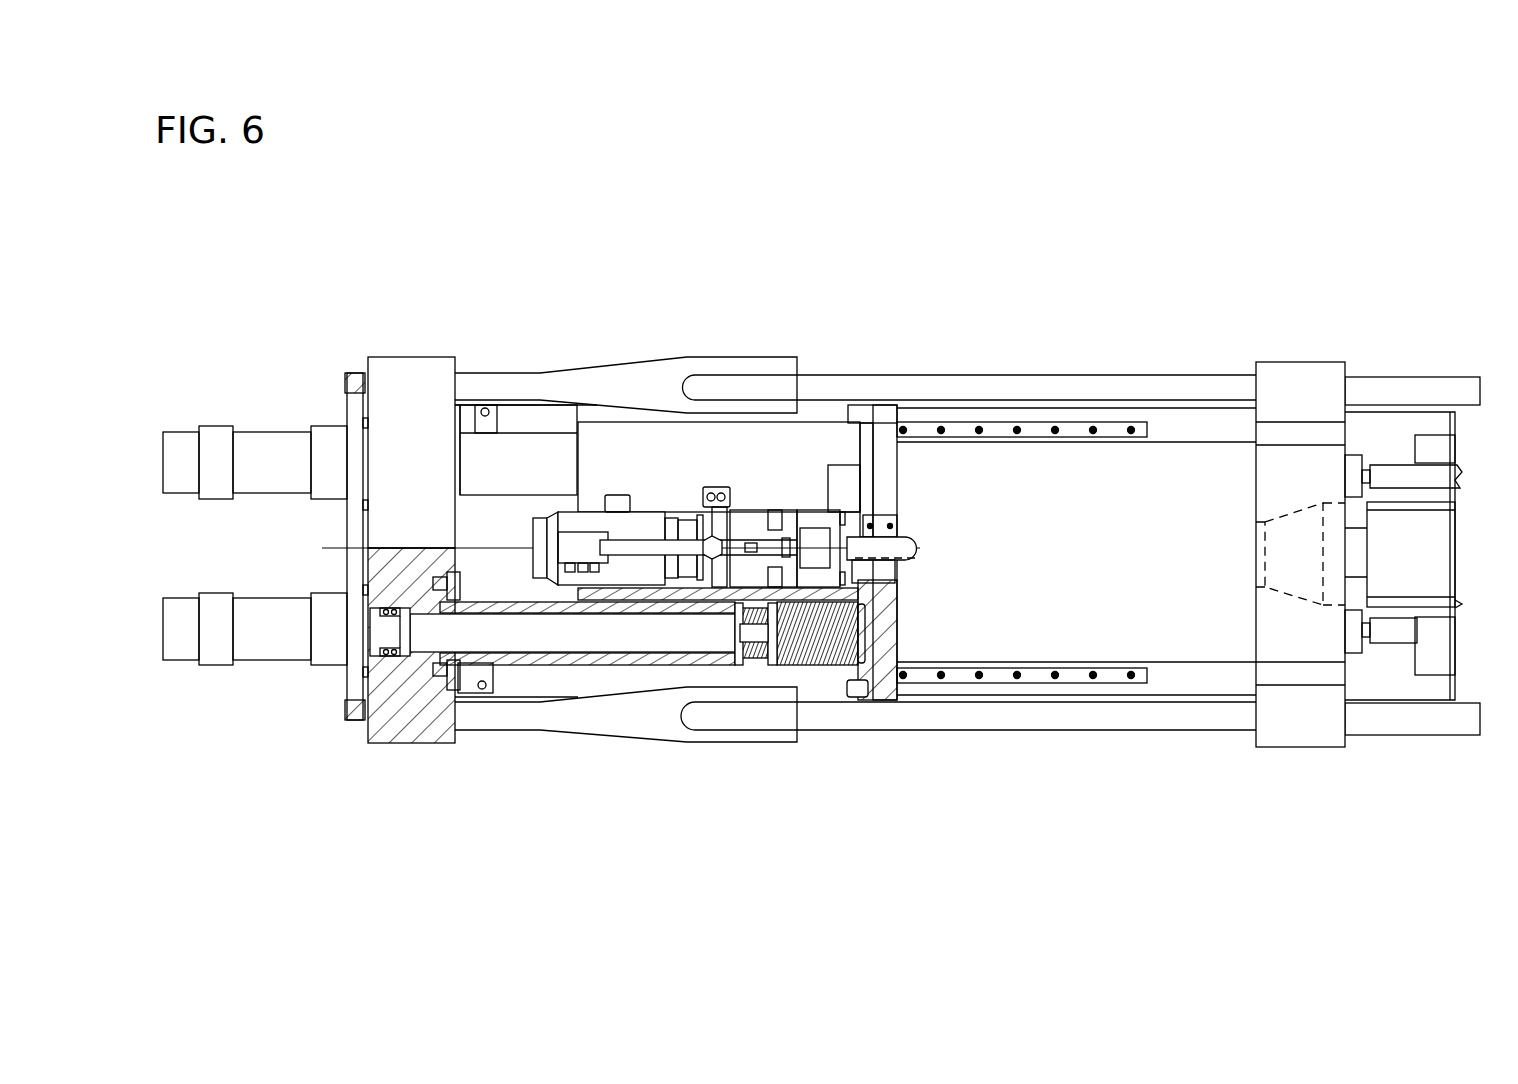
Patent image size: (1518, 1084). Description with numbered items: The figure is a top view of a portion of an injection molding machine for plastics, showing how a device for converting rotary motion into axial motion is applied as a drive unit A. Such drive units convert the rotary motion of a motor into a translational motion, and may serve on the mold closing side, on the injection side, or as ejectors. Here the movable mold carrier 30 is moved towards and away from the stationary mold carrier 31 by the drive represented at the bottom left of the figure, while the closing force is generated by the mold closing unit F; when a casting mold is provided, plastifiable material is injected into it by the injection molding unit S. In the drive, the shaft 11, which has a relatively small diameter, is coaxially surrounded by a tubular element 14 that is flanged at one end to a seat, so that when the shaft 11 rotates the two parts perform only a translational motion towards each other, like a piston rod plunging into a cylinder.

The shaft 11 is at (510, 630).
The tubular element 14 is at (560, 660).
The movable mold carrier 30 is at (883, 630).
The stationary mold carrier 31 is at (1265, 627).
The drive unit A is at (652, 512).
The mold closing unit F is at (926, 372).
The injection molding unit S is at (1412, 550).